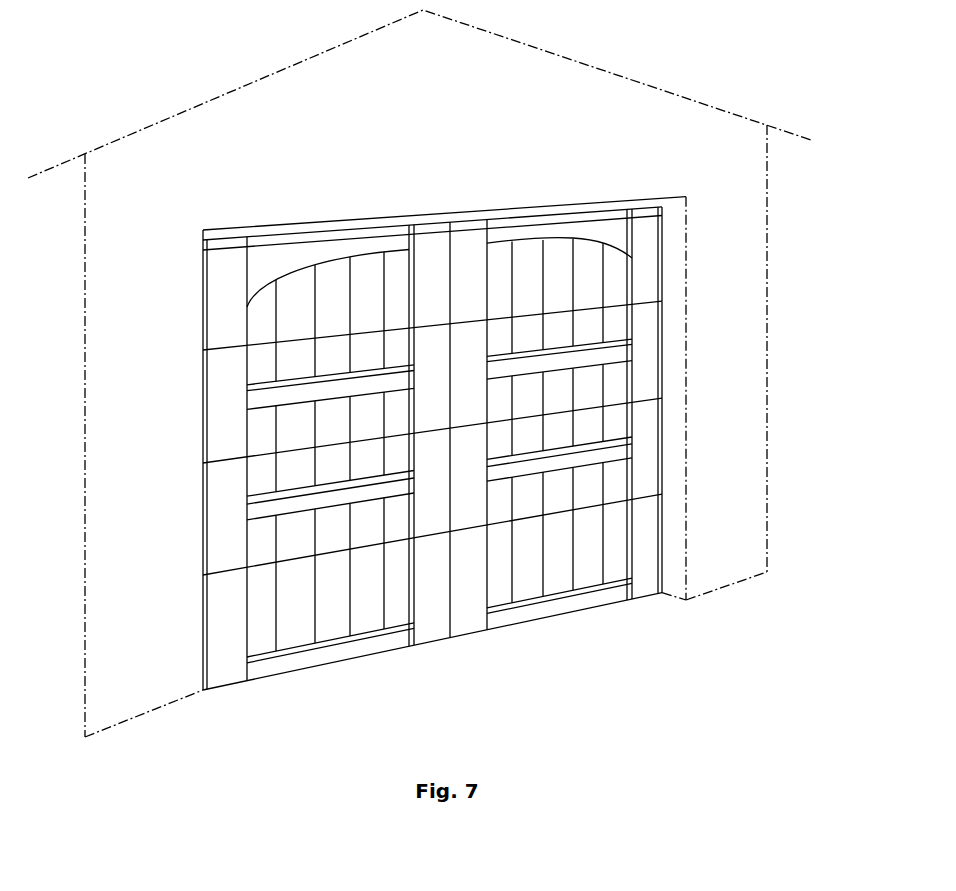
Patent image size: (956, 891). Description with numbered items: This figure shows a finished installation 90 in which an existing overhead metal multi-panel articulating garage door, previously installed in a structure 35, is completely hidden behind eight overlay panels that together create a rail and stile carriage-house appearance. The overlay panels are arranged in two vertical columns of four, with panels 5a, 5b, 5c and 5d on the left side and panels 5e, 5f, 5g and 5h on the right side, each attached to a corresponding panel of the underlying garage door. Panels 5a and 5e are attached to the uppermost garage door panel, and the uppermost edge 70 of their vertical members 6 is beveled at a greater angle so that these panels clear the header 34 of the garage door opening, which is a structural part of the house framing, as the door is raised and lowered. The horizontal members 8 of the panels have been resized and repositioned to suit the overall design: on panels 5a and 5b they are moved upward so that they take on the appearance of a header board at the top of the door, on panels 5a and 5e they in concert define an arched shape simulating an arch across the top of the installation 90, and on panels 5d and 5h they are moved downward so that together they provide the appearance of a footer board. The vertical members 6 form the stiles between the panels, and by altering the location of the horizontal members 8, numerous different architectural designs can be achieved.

The overlay panel 5a is at (223, 283).
The overlay panel 5b is at (223, 413).
The overlay panel 5c is at (222, 503).
The overlay panel 5d is at (220, 620).
The overlay panel 5e is at (646, 240).
The overlay panel 5f is at (645, 370).
The overlay panel 5g is at (645, 467).
The overlay panel 5h is at (648, 530).
The vertical member 6 is at (227, 317).
The horizontal member 8 is at (288, 253).
The header 34 is at (342, 222).
The structure 35 is at (380, 172).
The uppermost edge 70 is at (255, 240).
The installation 90 is at (709, 222).